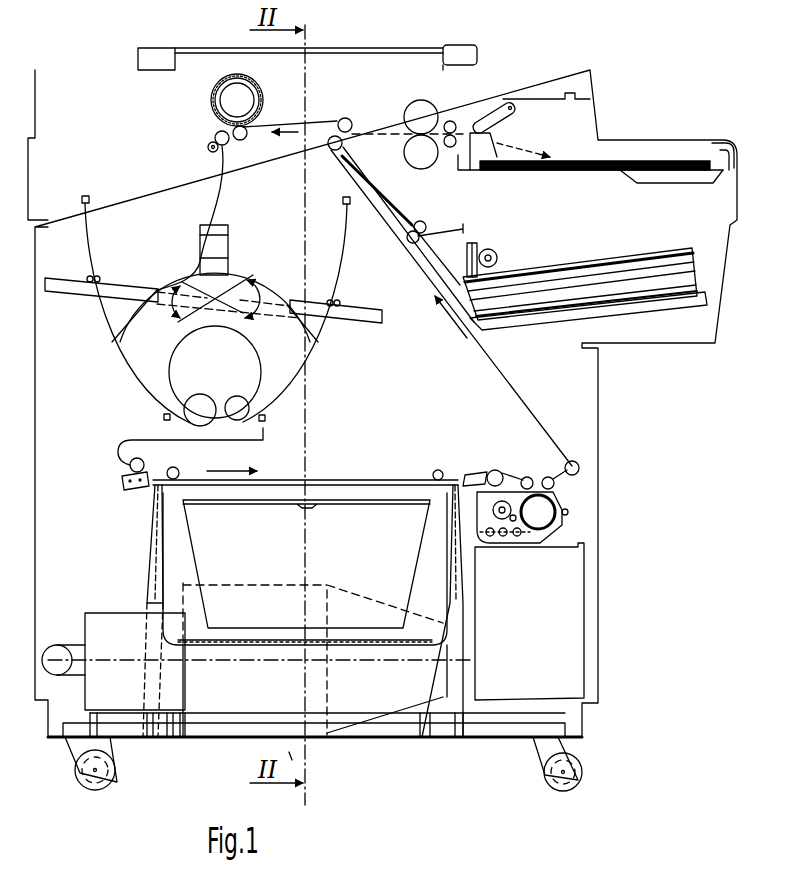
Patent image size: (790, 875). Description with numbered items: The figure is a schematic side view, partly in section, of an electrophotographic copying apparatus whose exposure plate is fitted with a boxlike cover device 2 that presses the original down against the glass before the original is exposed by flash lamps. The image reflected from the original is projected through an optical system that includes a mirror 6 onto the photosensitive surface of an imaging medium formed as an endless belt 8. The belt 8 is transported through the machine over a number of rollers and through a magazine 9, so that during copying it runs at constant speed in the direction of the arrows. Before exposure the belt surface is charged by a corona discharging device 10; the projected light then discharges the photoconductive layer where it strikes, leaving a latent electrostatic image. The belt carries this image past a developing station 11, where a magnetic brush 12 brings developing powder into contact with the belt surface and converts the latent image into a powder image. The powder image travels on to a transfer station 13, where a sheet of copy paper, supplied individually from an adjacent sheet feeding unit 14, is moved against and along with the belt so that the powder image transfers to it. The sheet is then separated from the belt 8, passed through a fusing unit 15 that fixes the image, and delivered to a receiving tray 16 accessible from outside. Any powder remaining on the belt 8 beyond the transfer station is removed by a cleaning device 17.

The cover device 2 is at (202, 60).
The mirror 6 is at (403, 592).
The endless belt 8 is at (218, 193).
The magazine 9 is at (155, 275).
The corona discharging device 10 is at (132, 490).
The developing station 11 is at (572, 491).
The magnetic brush 12 is at (540, 521).
The transfer station 13 is at (358, 118).
The sheet feeding unit 14 is at (543, 252).
The fusing unit 15 is at (460, 96).
The receiving tray 16 is at (633, 134).
The cleaning device 17 is at (265, 100).